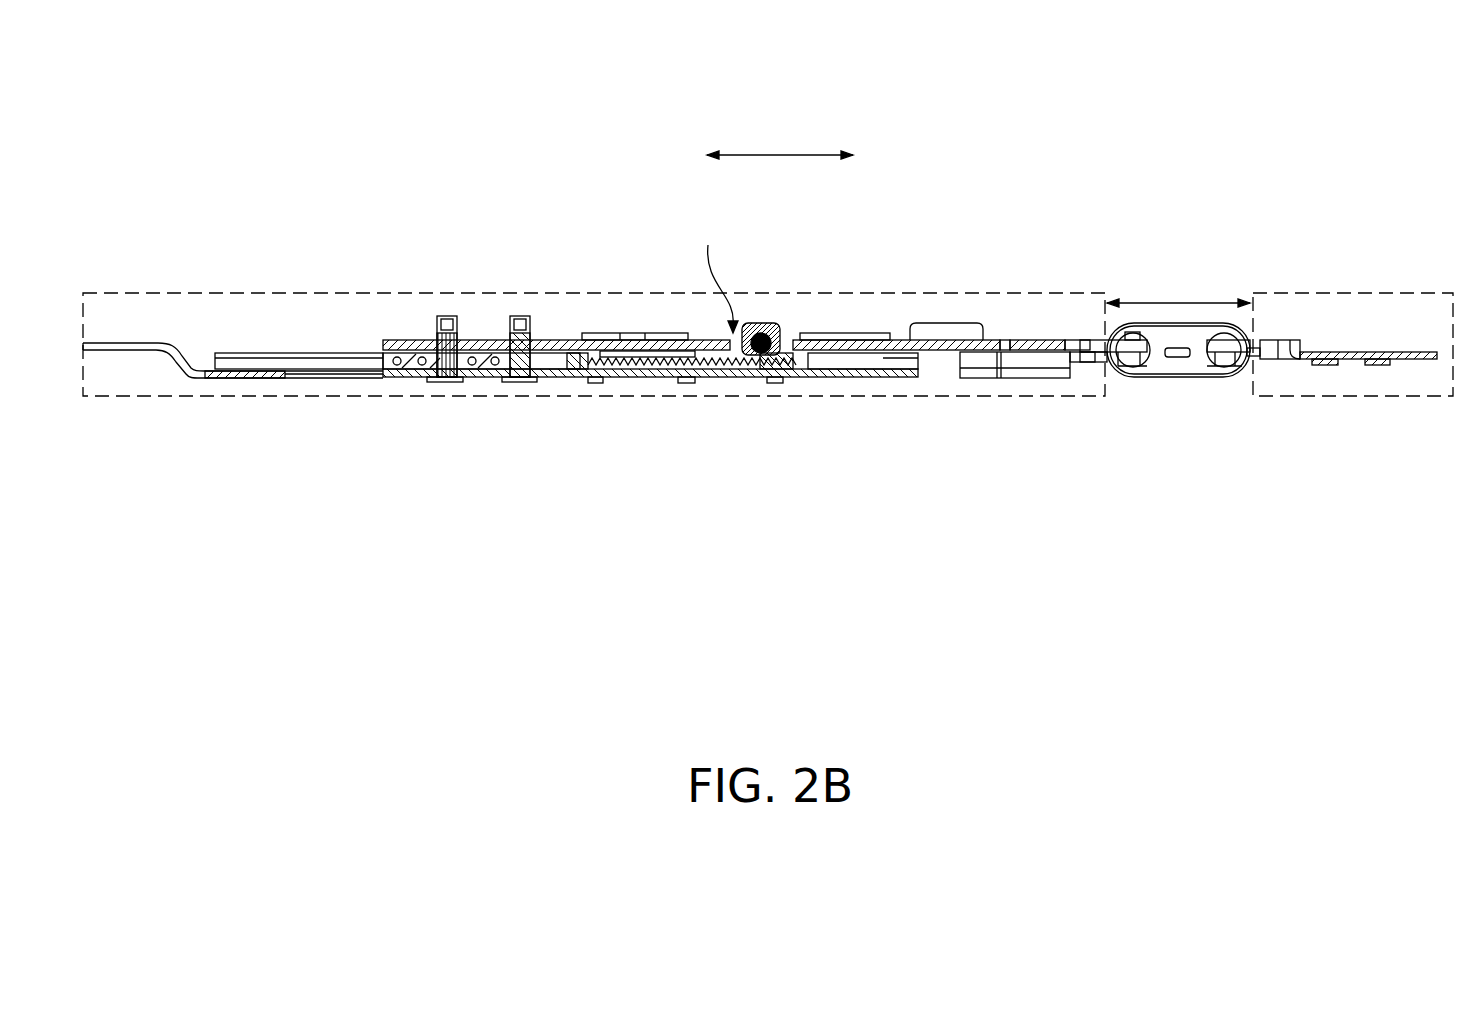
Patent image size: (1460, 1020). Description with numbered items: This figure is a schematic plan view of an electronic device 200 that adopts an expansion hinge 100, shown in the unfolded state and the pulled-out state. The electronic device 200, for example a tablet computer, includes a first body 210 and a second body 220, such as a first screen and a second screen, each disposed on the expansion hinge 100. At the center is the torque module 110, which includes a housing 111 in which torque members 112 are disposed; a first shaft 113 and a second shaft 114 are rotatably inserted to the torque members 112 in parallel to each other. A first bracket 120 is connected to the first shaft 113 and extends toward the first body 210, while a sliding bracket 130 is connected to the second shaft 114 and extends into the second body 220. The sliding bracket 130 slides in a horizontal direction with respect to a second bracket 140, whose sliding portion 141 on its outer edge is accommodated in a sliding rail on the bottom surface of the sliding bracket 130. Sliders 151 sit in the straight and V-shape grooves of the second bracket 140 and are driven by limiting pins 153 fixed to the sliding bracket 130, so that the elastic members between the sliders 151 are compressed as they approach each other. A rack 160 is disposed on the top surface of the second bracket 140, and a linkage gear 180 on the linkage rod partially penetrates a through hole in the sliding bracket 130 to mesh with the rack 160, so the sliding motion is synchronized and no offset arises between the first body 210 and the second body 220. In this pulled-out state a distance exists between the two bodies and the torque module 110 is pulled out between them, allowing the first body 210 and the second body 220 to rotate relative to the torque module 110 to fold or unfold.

The expansion hinge 100 is at (1186, 243).
The torque module 110 is at (1175, 416).
The housing 111 is at (1201, 416).
The torque member 112 is at (1167, 365).
The first shaft 113 is at (1230, 367).
The second shaft 114 is at (1127, 377).
The first bracket 120 is at (1410, 365).
The sliding bracket 130 is at (567, 340).
The second bracket 140 is at (299, 349).
The sliding portion 141 is at (262, 350).
The slider 151 is at (398, 340).
The limiting pin 153 is at (443, 383).
The rack 160 is at (747, 367).
The linkage gear 180 is at (760, 323).
The electronic device 200 is at (1333, 627).
The first body 210 is at (1343, 292).
The second body 220 is at (133, 383).